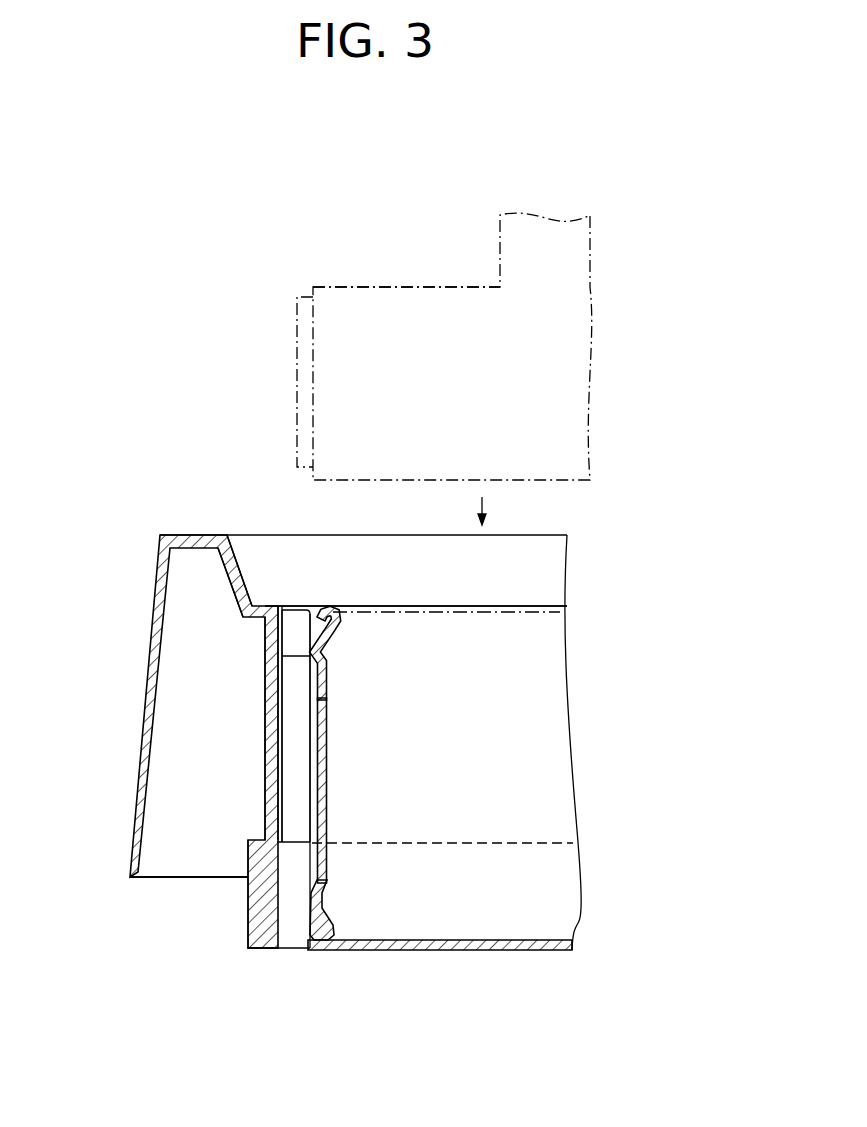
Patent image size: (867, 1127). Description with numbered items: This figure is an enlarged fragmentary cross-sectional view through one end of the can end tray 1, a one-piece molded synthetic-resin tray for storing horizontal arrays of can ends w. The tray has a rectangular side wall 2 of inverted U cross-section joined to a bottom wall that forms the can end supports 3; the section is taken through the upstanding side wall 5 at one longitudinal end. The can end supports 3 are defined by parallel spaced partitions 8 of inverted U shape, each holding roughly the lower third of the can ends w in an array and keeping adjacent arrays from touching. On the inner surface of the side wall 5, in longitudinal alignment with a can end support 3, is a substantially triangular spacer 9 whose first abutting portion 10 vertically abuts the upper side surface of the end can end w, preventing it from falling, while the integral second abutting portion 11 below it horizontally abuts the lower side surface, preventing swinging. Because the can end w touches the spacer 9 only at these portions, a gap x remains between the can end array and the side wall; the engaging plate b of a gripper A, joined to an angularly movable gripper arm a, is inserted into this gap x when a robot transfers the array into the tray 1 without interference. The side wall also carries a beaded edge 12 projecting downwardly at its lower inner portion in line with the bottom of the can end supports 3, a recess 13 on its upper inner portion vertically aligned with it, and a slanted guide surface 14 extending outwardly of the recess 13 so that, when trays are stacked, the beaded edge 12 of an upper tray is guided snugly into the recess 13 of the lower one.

The can end tray 1 is at (124, 500).
The side wall 2 is at (547, 723).
The can end supports 3 is at (530, 952).
The upstanding side wall 5 is at (140, 692).
The partition 8 is at (527, 843).
The spacer 9 is at (287, 636).
The first abutting portion 10 is at (293, 762).
The second abutting portion 11 is at (290, 916).
The beaded edge 12 is at (259, 950).
The recess 13 is at (267, 590).
The slanted guide surface 14 is at (238, 553).
The gripper A is at (477, 200).
The gripper arm a is at (392, 305).
The engaging plate b is at (298, 368).
The can end w is at (330, 703).
The gap x is at (294, 676).